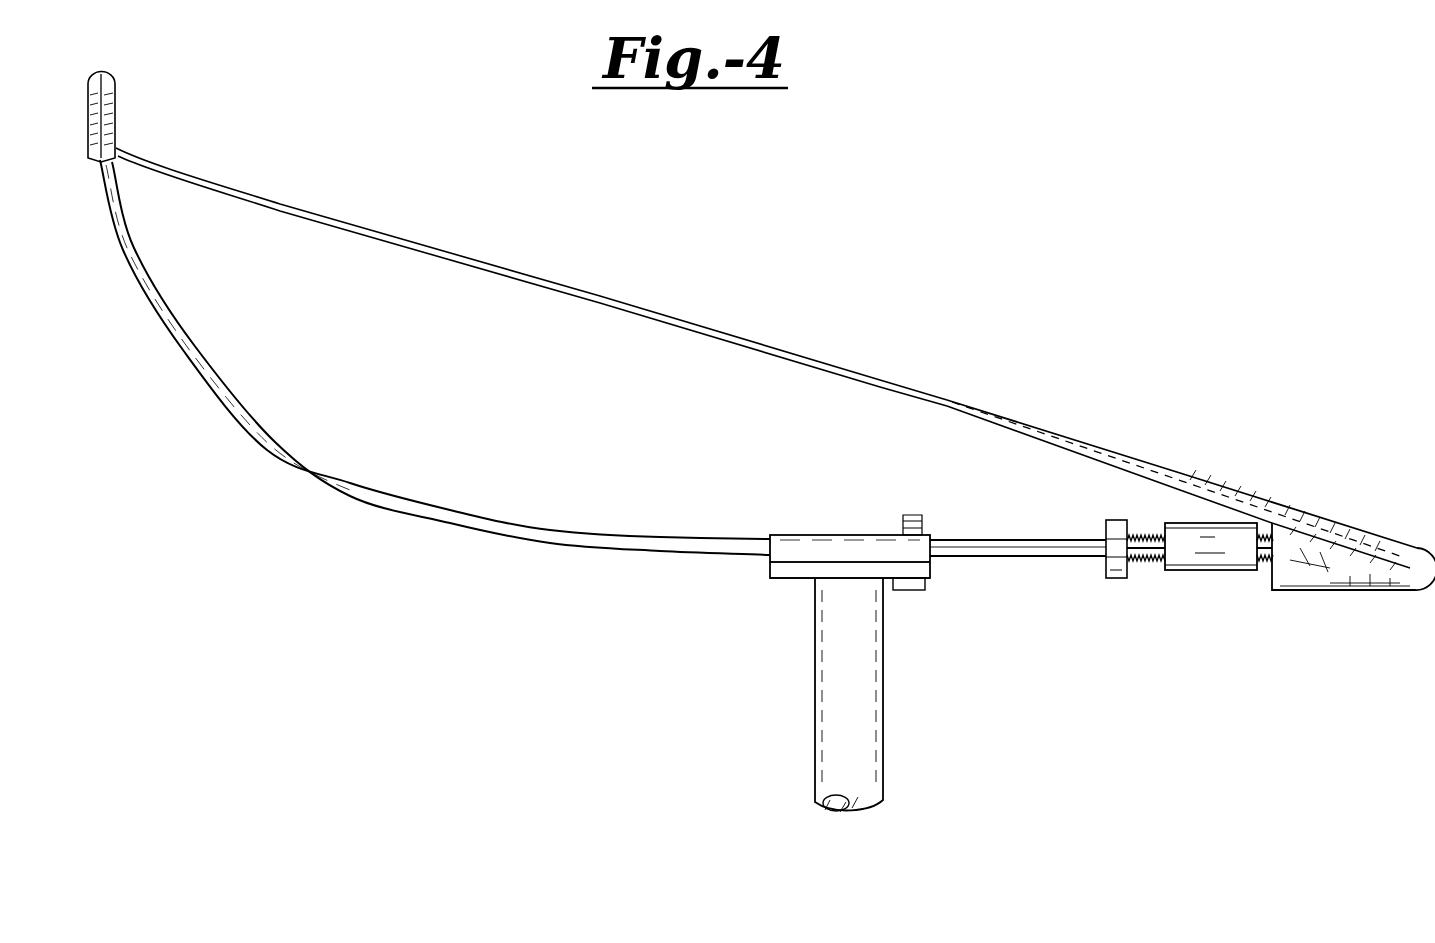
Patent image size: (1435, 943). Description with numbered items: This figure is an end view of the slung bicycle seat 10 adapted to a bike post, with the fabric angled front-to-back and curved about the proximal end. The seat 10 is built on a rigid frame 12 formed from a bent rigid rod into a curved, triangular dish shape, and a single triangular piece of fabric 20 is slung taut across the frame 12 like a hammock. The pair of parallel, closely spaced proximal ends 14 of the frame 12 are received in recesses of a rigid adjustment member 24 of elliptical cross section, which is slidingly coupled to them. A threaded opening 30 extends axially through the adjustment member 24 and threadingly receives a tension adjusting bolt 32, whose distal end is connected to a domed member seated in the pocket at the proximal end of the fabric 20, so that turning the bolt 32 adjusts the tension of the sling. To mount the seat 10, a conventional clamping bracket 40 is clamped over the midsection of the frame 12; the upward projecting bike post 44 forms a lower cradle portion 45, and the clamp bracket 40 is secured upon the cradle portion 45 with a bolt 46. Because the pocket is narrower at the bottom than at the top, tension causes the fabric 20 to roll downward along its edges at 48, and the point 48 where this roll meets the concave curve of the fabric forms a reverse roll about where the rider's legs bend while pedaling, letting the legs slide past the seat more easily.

The bicycle seat 10 is at (788, 277).
The rigid frame 12 is at (250, 415).
The proximal ends 14 is at (1008, 558).
The fabric 20 is at (355, 222).
The adjustment member 24 is at (1198, 572).
The threaded opening 30 is at (1163, 535).
The tension adjusting bolt 32 is at (1113, 580).
The clamping bracket 40 is at (778, 535).
The bike post 44 is at (812, 733).
The lower cradle portion 45 is at (785, 580).
The bolt 46 is at (903, 592).
The fabric roll point 48 is at (1040, 438).